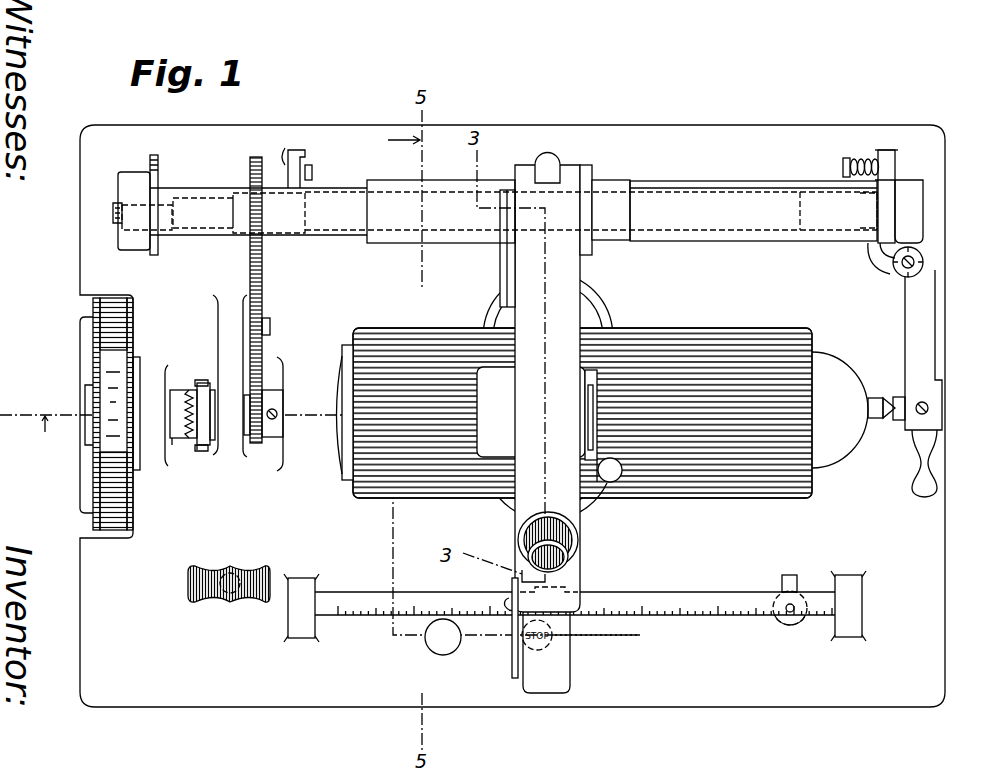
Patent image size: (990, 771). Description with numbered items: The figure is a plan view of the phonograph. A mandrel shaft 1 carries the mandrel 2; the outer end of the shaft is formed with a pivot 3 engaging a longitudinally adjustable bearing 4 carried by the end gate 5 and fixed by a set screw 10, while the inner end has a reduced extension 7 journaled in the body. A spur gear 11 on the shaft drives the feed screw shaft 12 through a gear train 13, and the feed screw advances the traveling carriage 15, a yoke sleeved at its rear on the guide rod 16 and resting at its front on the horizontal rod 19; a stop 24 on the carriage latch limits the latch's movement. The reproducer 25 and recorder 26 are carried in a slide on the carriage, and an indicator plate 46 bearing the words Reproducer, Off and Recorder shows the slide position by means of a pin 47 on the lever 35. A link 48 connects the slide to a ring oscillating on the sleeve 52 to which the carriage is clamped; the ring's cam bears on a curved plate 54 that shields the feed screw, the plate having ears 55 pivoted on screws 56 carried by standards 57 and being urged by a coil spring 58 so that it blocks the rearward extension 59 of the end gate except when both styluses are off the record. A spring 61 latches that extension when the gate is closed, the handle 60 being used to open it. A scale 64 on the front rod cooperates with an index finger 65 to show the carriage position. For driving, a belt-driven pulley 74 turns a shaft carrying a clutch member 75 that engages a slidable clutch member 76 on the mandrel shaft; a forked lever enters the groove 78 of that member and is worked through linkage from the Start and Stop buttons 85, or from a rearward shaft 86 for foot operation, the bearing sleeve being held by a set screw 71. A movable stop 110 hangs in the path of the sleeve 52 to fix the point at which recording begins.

The mandrel shaft 1 is at (876, 420).
The mandrel 2 is at (832, 460).
The pivot 3 is at (889, 397).
The longitudinally adjustable bearing 4 is at (896, 423).
The end gate 5 is at (938, 328).
The extension of reduced diameter 7 is at (605, 634).
The set screw 10 is at (929, 408).
The spur gear 11 is at (266, 440).
The feed screw shaft 12 is at (783, 222).
The gear train 13 is at (262, 294).
The traveling carriage 15 is at (582, 262).
The guide rod 16 is at (200, 232).
The horizontal rod 19 is at (702, 591).
The stop 24 is at (526, 570).
The reproducer 25 is at (607, 300).
The recorder 26 is at (582, 515).
The lever 35 is at (613, 483).
The indicator plate 46 is at (546, 371).
The pin 47 is at (578, 436).
The link 48 is at (500, 262).
The sleeve 52 is at (405, 241).
The curved plate 54 is at (722, 182).
The ears 55 is at (305, 153).
The screws 56 is at (312, 178).
The standards 57 is at (284, 152).
The coil spring 58 is at (845, 158).
The rearward extension 59 is at (870, 253).
The handle 60 is at (937, 481).
The spring 61 is at (902, 180).
The scale 64 is at (352, 620).
The index finger 65 is at (505, 614).
The set screw 71 is at (512, 680).
The driving pulley 74 is at (134, 311).
The clutch member 75 is at (181, 448).
The slidable clutch member 76 is at (197, 450).
The groove 78 is at (192, 394).
The buttons 85 is at (432, 650).
The shaft 86 is at (792, 576).
The movable stop 110 is at (158, 162).